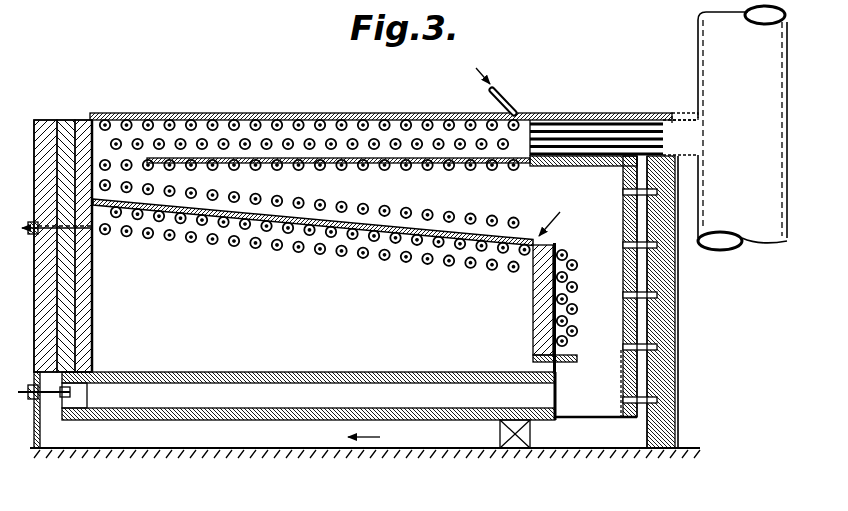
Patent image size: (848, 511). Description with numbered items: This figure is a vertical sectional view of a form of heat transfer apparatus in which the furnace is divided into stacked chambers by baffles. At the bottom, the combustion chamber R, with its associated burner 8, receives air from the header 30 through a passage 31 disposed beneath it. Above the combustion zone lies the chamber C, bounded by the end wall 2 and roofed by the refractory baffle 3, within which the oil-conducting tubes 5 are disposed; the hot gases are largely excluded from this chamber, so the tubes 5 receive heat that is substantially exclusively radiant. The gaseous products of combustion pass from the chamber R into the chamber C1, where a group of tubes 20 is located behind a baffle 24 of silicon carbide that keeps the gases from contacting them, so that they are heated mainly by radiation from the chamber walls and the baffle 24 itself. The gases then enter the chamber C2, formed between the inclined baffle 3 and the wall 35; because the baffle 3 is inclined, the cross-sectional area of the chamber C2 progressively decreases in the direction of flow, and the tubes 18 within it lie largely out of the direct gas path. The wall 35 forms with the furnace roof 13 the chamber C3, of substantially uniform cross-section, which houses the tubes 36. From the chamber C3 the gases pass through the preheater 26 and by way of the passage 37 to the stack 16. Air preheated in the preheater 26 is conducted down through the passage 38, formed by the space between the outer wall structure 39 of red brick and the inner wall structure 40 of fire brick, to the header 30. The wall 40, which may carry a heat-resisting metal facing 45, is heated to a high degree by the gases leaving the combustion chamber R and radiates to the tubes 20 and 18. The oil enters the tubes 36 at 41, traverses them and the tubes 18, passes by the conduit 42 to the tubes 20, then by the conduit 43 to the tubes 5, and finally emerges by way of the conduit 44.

The end wall 2 is at (88, 322).
The baffle 3 is at (117, 214).
The tubes 5 is at (410, 262).
The burner 8 is at (48, 400).
The roof 13 is at (304, 114).
The stack 16 is at (698, 55).
The tubes 18 is at (458, 216).
The tubes 20 is at (574, 262).
The baffle 24 is at (574, 362).
The preheater 26 is at (596, 128).
The header 30 is at (512, 447).
The passage 31 is at (405, 445).
The wall 35 is at (237, 158).
The tubes 36 is at (419, 142).
The passage 37 is at (686, 128).
The passage 38 is at (645, 333).
The wall structure 39 is at (666, 376).
The wall structure 40 is at (626, 310).
The oil inlet 41 is at (498, 90).
The conduit 42 is at (559, 214).
The conduit 43 is at (528, 265).
The conduit 44 is at (100, 232).
The heat-resisting metal facing 45 is at (620, 380).
The chamber C is at (287, 302).
The chamber C1 is at (600, 286).
The chamber C2 is at (383, 188).
The chamber C3 is at (205, 135).
The combustion chamber R is at (312, 376).